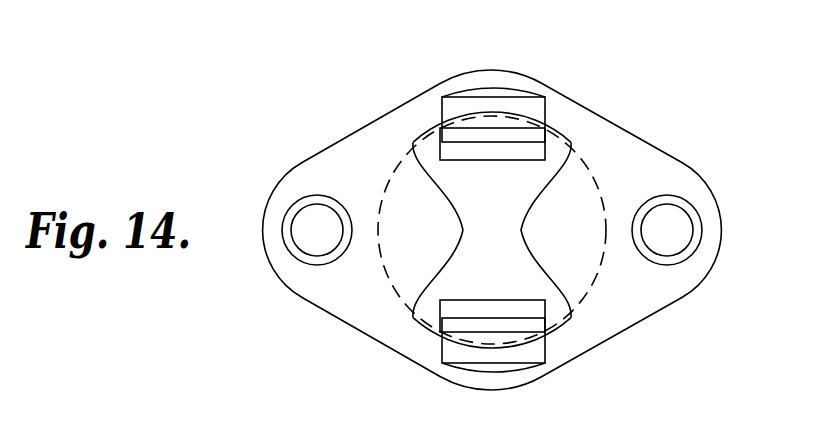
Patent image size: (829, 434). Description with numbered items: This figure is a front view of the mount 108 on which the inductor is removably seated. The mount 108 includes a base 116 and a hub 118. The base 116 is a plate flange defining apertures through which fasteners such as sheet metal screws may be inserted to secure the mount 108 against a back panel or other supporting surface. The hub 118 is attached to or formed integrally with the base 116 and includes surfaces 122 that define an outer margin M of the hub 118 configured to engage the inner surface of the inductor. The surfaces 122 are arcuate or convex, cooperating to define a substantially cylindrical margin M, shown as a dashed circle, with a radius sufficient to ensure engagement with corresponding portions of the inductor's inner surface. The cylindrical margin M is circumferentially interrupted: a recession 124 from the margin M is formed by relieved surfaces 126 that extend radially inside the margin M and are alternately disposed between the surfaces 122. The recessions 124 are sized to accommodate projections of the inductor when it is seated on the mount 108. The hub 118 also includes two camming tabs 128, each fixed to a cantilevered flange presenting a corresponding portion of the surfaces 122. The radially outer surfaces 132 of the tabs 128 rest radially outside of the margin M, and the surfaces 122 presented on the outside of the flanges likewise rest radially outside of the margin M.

The mount 108 is at (488, 209).
The base 116 is at (321, 162).
The hub 118 is at (429, 142).
The surfaces 122 is at (553, 136).
The recession 124 is at (406, 238).
The relieved surfaces 126 is at (437, 291).
The camming tabs 128 is at (545, 96).
The radially outer surfaces 132 is at (470, 88).
The outer margin M is at (594, 176).